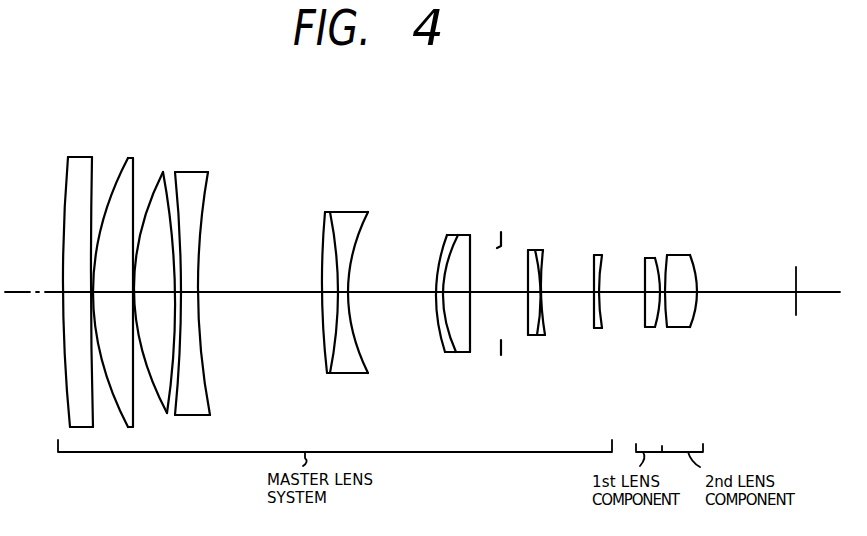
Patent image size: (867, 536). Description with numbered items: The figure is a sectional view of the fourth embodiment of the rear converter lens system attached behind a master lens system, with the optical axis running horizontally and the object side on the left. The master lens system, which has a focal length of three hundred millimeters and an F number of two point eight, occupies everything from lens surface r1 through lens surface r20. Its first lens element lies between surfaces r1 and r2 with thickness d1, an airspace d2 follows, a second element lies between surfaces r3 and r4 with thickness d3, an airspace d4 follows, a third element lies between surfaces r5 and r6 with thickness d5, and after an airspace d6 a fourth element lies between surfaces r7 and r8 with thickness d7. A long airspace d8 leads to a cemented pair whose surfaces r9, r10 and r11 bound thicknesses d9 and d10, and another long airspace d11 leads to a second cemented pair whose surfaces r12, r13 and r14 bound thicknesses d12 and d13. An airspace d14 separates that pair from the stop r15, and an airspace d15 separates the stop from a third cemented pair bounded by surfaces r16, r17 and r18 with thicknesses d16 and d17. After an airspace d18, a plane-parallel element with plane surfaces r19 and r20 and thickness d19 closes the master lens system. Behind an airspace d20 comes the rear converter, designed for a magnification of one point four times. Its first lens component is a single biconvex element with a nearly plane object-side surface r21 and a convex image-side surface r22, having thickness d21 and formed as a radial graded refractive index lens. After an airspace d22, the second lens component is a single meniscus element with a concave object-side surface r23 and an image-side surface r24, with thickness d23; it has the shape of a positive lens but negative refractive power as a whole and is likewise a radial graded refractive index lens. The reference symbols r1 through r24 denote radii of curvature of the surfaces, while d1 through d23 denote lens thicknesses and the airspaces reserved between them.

The radius of curvature of first lens surface r1 is at (68, 166).
The radius of curvature of second lens surface r2 is at (91, 156).
The radius of curvature of third lens surface r3 is at (124, 164).
The radius of curvature of fourth lens surface r4 is at (135, 166).
The radius of curvature of fifth lens surface r5 is at (159, 171).
The radius of curvature of sixth lens surface r6 is at (165, 170).
The radius of curvature of seventh lens surface r7 is at (183, 171).
The radius of curvature of eighth lens surface r8 is at (203, 171).
The radius of curvature of ninth lens surface r9 is at (322, 228).
The radius of curvature of tenth lens surface r10 is at (331, 212).
The radius of curvature of eleventh lens surface r11 is at (360, 212).
The radius of curvature of twelfth lens surface r12 is at (440, 234).
The radius of curvature of thirteenth lens surface r13 is at (457, 234).
The radius of curvature of fourteenth lens surface r14 is at (472, 236).
The stop r15 is at (501, 232).
The radius of curvature of sixteenth lens surface r16 is at (528, 250).
The radius of curvature of seventeenth lens surface r17 is at (533, 250).
The radius of curvature of eighteenth lens surface r18 is at (545, 251).
The radius of curvature of nineteenth lens surface r19 is at (595, 255).
The radius of curvature of twentieth lens surface r20 is at (602, 255).
The radius of curvature of twenty-first lens surface r21 is at (645, 257).
The radius of curvature of twenty-second lens surface r22 is at (654, 258).
The radius of curvature of twenty-third lens surface r23 is at (677, 255).
The radius of curvature of twenty-fourth lens surface r24 is at (696, 256).
The thickness of first lens element d1 is at (70, 294).
The airspace between first and second lens elements d2 is at (91, 294).
The thickness of second lens element d3 is at (110, 296).
The airspace between second and third lens elements d4 is at (125, 291).
The thickness of third lens element d5 is at (153, 296).
The airspace between third and fourth lens elements d6 is at (180, 296).
The thickness of fourth lens element d7 is at (198, 292).
The airspace between fourth and fifth lens elements d8 is at (267, 296).
The thickness of fifth lens element d9 is at (328, 296).
The thickness of sixth lens element d10 is at (348, 297).
The airspace between sixth and seventh lens elements d11 is at (398, 297).
The thickness of seventh lens element d12 is at (453, 352).
The thickness of eighth lens element d13 is at (473, 345).
The airspace between eighth lens element and stop d14 is at (503, 292).
The airspace between stop and ninth lens element d15 is at (517, 291).
The thickness of ninth lens element d16 is at (527, 336).
The thickness of tenth lens element d17 is at (540, 334).
The airspace between tenth and eleventh lens elements d18 is at (568, 297).
The thickness of eleventh lens element d19 is at (595, 330).
The airspace between master lens system and first lens component d20 is at (610, 294).
The thickness of graded refractive index lens 1 d21 is at (652, 328).
The airspace between first and second lens components d22 is at (667, 330).
The thickness of graded refractive index lens 2 d23 is at (690, 297).